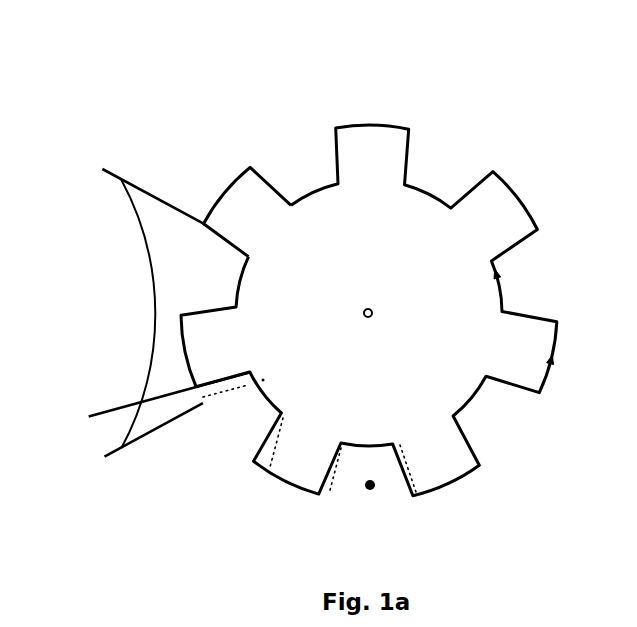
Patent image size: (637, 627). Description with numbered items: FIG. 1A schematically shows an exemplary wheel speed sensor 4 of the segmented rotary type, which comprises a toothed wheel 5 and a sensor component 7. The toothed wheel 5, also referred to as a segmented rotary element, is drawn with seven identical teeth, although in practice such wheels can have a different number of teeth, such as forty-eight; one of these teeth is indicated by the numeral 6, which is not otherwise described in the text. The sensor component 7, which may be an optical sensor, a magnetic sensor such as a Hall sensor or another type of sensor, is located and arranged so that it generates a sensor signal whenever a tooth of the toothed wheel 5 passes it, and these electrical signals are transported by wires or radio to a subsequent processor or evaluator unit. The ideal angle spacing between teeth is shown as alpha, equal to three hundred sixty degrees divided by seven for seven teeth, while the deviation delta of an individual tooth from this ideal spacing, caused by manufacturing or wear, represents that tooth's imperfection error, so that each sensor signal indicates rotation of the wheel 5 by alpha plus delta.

The wheel speed sensor 4 is at (313, 249).
The toothed wheel 5 is at (452, 305).
The tooth 6 is at (238, 209).
The sensor component 7 is at (358, 488).